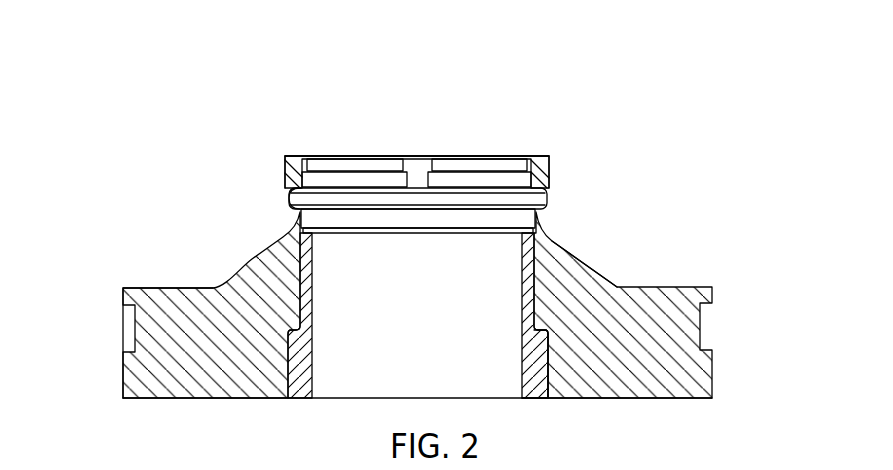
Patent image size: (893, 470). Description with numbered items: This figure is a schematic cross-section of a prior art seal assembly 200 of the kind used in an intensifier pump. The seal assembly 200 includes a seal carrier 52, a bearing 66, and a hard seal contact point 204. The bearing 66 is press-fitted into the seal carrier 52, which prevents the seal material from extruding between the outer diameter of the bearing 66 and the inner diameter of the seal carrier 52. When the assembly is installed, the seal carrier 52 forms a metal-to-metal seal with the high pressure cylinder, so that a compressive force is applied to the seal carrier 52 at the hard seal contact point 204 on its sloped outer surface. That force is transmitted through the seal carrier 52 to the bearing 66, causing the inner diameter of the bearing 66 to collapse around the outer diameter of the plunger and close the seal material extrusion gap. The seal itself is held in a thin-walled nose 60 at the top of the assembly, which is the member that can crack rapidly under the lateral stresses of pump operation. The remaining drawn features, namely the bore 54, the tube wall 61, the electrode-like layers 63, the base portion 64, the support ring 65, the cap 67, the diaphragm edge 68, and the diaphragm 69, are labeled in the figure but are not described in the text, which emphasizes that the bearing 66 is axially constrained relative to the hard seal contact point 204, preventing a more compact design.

The seal assembly 200 is at (452, 108).
The seal carrier 52 is at (667, 287).
The bore 54 is at (318, 220).
The nose 60 is at (275, 157).
The tube 61 is at (520, 221).
The electrodes 63 is at (532, 156).
The base portion 64 is at (100, 240).
The support ring 65 is at (553, 238).
The bearing 66 is at (532, 383).
The cap 67 is at (552, 186).
The diaphragm edge 68 is at (305, 192).
The diaphragm 69 is at (552, 208).
The hard seal contact point 204 is at (607, 273).